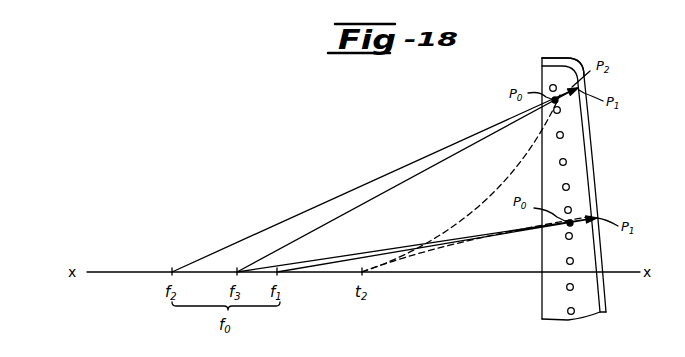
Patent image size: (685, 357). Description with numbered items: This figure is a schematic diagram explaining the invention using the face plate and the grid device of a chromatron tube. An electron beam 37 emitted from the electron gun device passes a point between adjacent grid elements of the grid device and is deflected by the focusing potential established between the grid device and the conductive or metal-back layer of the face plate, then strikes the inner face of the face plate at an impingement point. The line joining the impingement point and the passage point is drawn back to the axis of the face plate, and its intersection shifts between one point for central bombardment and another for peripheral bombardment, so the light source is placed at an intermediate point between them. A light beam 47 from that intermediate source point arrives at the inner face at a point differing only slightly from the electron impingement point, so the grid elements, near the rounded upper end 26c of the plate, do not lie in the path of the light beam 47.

The rounded upper end of plate 26c is at (543, 58).
The light beam 47 is at (370, 180).
The electron beam 37 is at (472, 207).